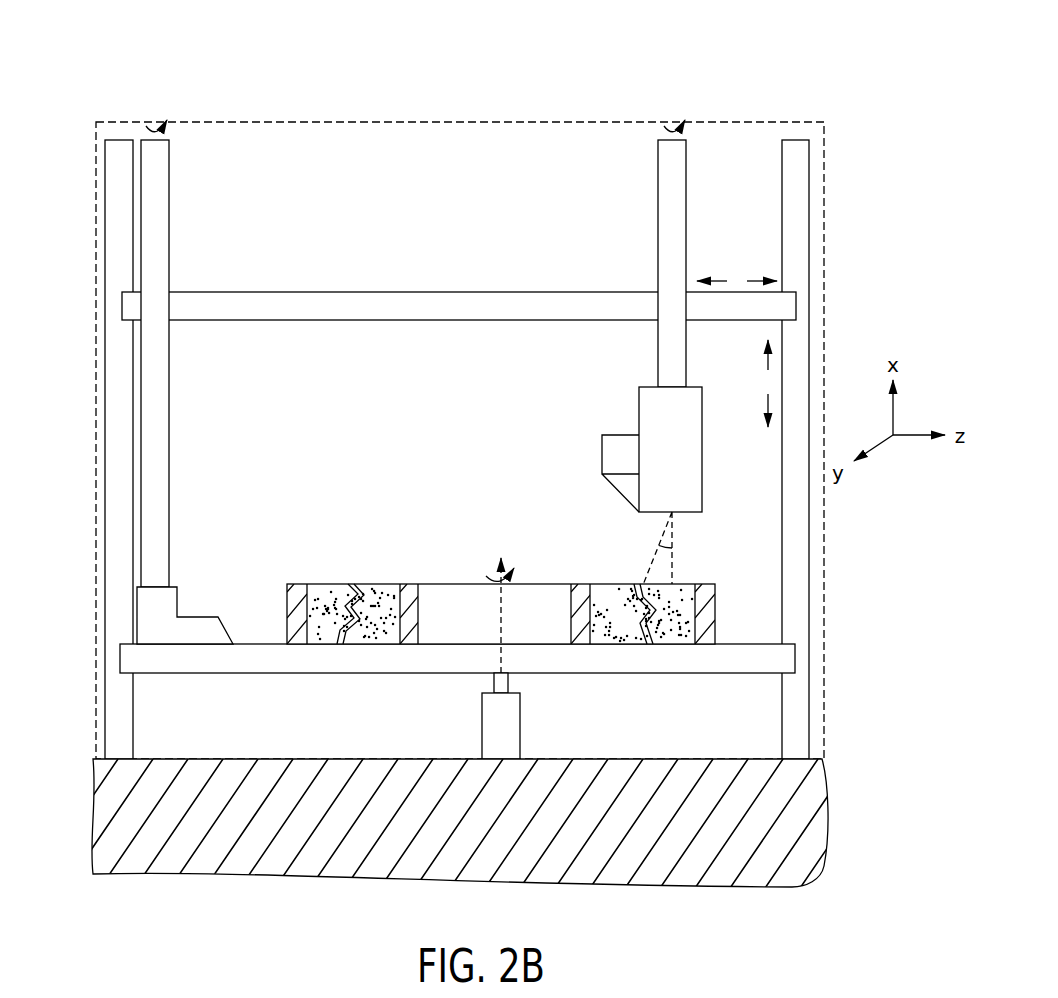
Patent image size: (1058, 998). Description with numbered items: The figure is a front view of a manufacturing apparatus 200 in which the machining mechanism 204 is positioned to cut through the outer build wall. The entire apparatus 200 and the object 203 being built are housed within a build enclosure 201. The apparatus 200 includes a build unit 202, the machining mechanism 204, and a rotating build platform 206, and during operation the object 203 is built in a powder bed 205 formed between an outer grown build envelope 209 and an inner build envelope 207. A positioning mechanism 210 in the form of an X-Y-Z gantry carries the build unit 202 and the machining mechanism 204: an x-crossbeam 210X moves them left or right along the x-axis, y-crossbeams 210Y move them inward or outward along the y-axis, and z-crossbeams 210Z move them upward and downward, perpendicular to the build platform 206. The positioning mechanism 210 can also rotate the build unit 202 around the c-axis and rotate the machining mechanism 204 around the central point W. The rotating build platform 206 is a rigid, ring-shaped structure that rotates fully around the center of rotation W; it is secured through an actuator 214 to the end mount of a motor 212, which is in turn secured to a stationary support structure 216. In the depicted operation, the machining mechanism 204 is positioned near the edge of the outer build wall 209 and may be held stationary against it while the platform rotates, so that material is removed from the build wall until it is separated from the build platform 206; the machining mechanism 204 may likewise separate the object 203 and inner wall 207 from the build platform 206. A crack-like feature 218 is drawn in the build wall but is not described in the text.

The manufacturing apparatus 200 is at (497, 84).
The build enclosure 201 is at (247, 121).
The build unit 202 is at (645, 404).
The object 203 is at (351, 578).
The machining mechanism 204 is at (145, 618).
The powder bed 205 is at (373, 624).
The rotating build platform 206 is at (733, 666).
The inner build envelope 207 is at (410, 585).
The outer grown build envelope 209 is at (298, 583).
The positioning mechanism 210 is at (795, 139).
The x-crossbeam 210X is at (797, 312).
The y-crossbeam 210Y is at (159, 244).
The z-crossbeam 210Z is at (118, 188).
The motor 212 is at (510, 745).
The actuator 214 is at (509, 676).
The stationary support structure 216 is at (797, 803).
The crack 218 is at (367, 590).